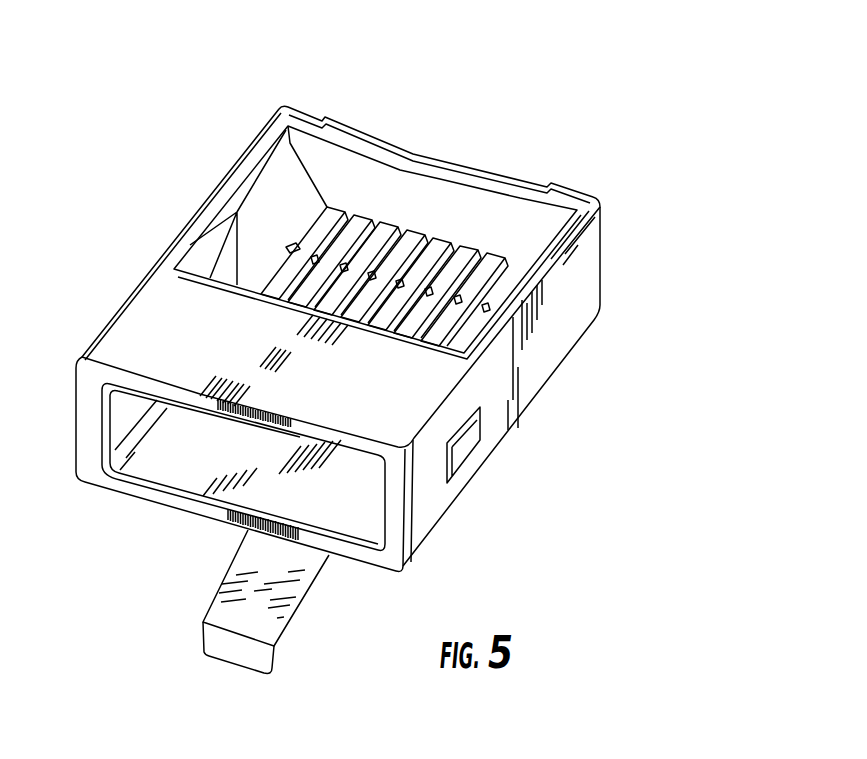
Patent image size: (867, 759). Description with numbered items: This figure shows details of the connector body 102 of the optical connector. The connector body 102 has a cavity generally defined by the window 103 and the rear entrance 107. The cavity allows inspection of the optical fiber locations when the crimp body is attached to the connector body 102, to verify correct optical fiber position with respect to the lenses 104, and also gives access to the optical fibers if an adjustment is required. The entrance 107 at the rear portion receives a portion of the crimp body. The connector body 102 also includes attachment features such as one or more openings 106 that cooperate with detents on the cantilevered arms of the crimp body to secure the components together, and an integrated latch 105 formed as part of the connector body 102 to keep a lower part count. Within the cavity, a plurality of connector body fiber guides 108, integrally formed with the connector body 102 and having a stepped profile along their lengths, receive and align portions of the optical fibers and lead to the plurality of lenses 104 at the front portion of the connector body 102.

The connector body 102 is at (676, 126).
The window 103 is at (272, 215).
The lenses 104 is at (424, 234).
The integrated latch 105 is at (300, 608).
The openings 106 is at (453, 457).
The rear entrance 107 is at (167, 473).
The connector body fiber guides 108 is at (446, 335).